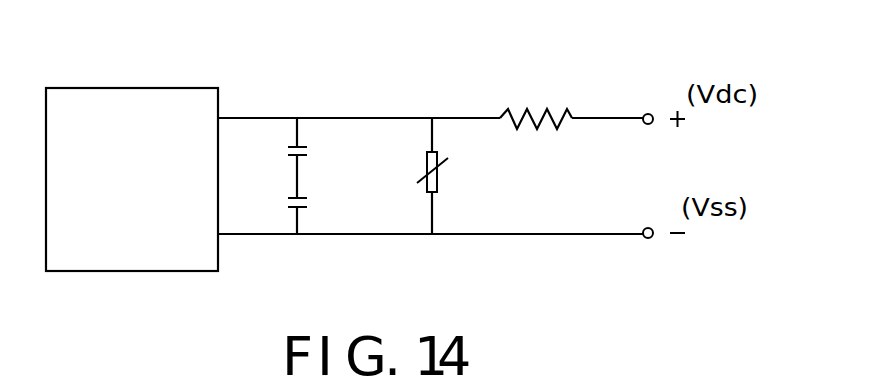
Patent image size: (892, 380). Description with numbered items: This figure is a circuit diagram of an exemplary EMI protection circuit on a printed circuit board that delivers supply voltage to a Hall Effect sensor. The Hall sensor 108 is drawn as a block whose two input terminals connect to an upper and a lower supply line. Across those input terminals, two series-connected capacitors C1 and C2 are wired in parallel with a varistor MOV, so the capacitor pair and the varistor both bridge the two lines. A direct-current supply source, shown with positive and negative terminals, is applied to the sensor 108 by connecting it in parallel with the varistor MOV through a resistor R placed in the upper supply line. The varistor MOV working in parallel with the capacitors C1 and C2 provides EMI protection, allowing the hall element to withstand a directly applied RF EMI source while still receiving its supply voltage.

The Hall sensor 108 is at (124, 93).
The capacitor C1 is at (277, 155).
The capacitor C2 is at (277, 208).
The varistor MOV is at (401, 172).
The resistor R is at (536, 104).